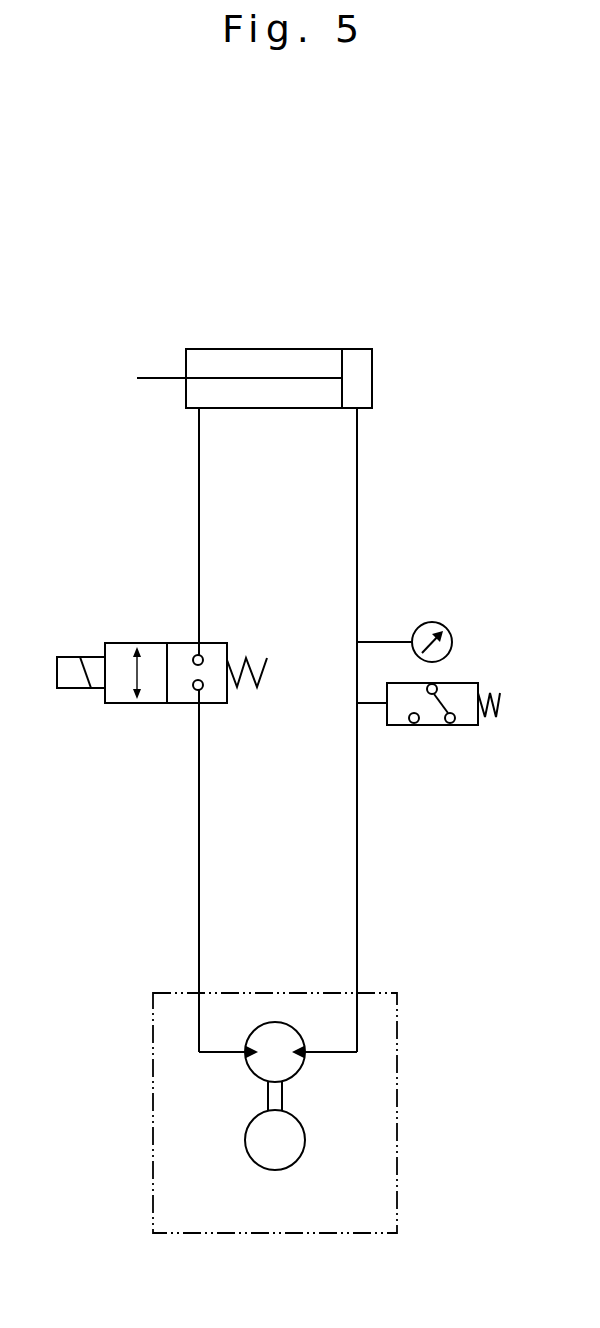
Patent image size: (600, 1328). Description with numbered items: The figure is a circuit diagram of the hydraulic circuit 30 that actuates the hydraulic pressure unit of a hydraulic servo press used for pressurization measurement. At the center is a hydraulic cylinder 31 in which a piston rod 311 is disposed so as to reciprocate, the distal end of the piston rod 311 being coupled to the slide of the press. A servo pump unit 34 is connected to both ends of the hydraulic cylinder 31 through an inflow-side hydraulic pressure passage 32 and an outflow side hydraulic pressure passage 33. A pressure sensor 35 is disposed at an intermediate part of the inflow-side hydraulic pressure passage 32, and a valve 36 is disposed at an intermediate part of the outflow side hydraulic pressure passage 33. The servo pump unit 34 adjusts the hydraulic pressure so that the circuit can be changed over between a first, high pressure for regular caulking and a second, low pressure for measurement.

The hydraulic circuit 30 is at (295, 724).
The hydraulic cylinder 31 is at (255, 311).
The piston rod 311 is at (227, 312).
The inflow-side hydraulic pressure passage 32 is at (399, 730).
The outflow side hydraulic pressure passage 33 is at (152, 730).
The servo pump unit 34 is at (343, 1113).
The pressure sensor 35 is at (447, 640).
The valve 36 is at (162, 606).